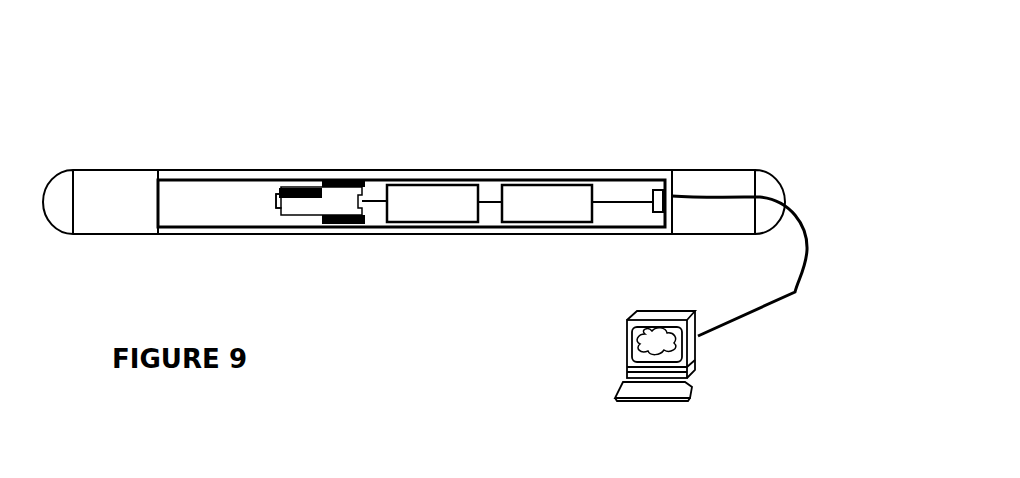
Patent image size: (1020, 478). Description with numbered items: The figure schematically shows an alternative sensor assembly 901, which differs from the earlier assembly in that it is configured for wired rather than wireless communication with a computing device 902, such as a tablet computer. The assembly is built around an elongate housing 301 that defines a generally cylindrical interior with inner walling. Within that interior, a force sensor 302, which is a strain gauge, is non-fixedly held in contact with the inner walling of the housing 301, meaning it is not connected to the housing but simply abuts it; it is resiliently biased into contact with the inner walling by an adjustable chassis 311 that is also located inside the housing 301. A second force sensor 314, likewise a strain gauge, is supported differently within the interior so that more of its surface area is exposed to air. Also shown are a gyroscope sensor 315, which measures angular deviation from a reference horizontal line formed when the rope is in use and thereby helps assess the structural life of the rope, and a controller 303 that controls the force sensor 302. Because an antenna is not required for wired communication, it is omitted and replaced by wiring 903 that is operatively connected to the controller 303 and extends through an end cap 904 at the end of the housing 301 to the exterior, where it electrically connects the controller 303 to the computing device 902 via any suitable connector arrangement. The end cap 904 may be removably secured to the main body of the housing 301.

The sensor assembly 901 is at (556, 82).
The housing 301 is at (203, 170).
The force sensor 302 is at (345, 182).
The second force sensor 314 is at (293, 193).
The adjustable chassis 311 is at (303, 205).
The gyroscope sensor 315 is at (452, 215).
The controller 303 is at (568, 215).
The end cap 904 is at (720, 172).
The wiring 903 is at (752, 313).
The computing device 902 is at (627, 342).